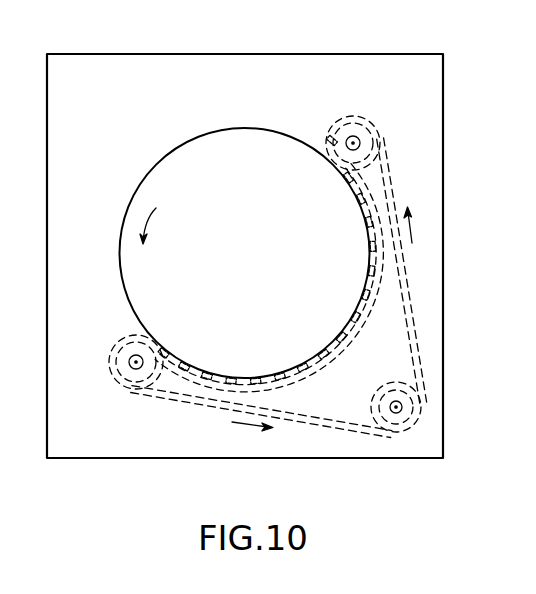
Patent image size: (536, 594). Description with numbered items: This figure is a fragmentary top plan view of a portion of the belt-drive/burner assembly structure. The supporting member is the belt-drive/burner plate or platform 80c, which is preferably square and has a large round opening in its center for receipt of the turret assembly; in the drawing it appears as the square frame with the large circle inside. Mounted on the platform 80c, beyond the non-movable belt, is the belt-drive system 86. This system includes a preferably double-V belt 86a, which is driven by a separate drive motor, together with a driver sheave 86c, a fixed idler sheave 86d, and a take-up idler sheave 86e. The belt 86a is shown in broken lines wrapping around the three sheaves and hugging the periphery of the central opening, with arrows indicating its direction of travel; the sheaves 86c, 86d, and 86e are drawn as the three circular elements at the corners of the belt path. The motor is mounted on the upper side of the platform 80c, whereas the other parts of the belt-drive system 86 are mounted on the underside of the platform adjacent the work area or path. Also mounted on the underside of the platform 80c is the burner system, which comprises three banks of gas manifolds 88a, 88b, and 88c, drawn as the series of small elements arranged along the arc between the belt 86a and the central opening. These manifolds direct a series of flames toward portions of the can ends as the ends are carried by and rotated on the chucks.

The belt-drive/burner plate or platform 80c is at (140, 112).
The belt-drive system 86 is at (370, 458).
The double-V belt 86a is at (403, 289).
The driver sheave 86c is at (145, 380).
The fixed idler sheave 86d is at (348, 123).
The take-up idler sheave 86e is at (413, 418).
The gas manifold bank 88a is at (266, 393).
The gas manifold bank 88b is at (360, 332).
The gas manifold bank 88c is at (326, 137).